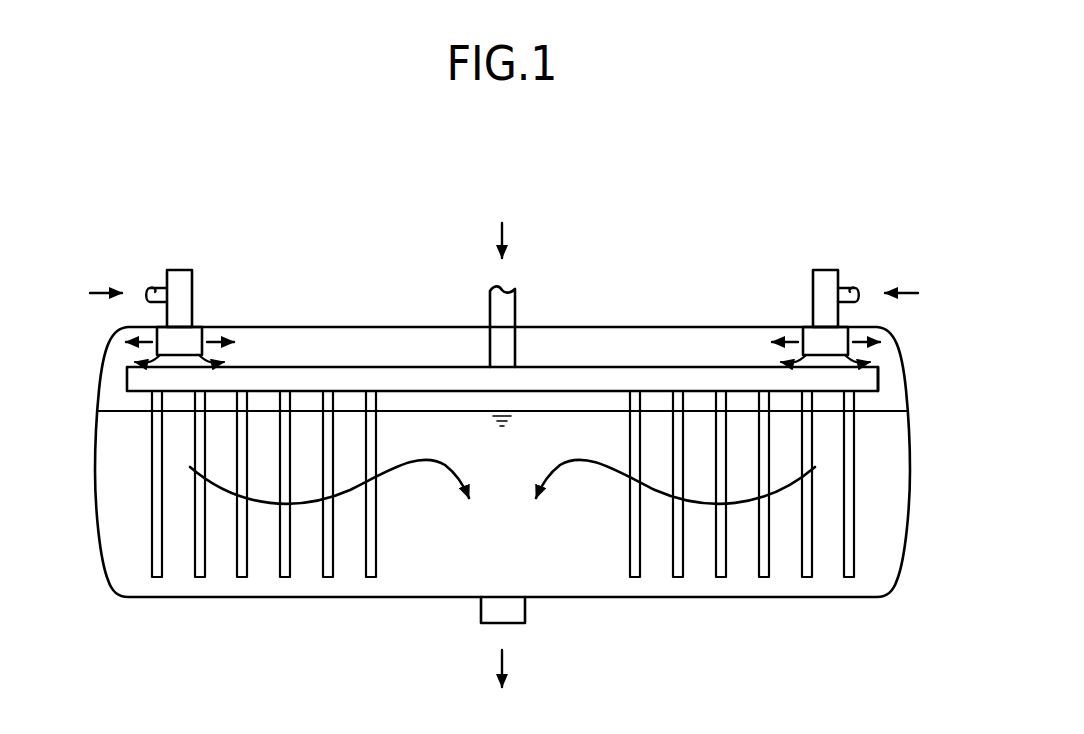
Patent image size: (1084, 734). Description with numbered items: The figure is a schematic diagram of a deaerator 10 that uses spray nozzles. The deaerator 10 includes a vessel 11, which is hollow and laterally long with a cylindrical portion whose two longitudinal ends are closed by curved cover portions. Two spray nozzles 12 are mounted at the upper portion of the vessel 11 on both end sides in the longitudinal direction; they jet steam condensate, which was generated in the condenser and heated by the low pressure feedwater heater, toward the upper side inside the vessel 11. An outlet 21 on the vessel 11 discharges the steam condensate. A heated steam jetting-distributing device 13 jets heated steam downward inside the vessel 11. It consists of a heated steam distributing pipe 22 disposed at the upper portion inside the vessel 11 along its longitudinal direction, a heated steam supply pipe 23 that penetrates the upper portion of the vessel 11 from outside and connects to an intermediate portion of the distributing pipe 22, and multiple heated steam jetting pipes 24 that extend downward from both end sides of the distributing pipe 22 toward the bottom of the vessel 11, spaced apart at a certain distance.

The deaerator 10 is at (330, 252).
The vessel 11 is at (671, 325).
The spray nozzle 12 is at (195, 284).
The heated steam jetting-distributing device 13 is at (885, 376).
The outlet 21 is at (517, 623).
The heated steam distributing pipe 22 is at (417, 378).
The heated steam supply pipe 23 is at (508, 315).
The heated steam jetting pipe 24 is at (157, 548).